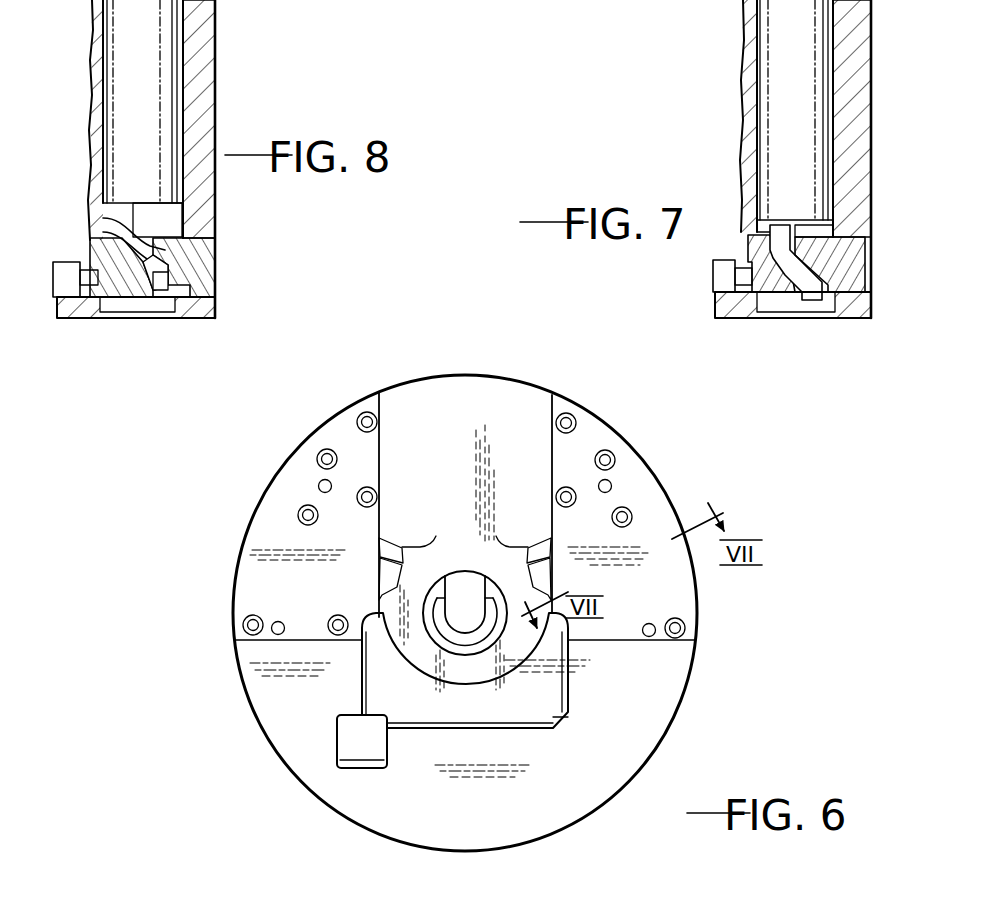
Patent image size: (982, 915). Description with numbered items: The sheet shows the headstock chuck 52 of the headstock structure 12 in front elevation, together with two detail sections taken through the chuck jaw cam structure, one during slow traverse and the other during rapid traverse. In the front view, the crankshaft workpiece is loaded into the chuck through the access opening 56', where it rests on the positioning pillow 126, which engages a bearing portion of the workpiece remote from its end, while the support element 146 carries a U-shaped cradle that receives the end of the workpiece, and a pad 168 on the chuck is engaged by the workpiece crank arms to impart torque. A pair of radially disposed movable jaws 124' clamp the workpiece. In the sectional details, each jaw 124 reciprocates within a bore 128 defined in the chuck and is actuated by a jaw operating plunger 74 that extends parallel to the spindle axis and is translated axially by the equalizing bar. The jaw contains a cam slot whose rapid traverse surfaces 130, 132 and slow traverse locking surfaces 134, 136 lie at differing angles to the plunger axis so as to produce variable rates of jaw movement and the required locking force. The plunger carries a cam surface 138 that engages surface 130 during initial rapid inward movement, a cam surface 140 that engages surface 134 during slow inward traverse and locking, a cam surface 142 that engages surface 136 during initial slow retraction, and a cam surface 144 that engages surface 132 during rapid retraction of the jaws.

In FIG. 6, the headstock structure 12 is at (210, 582).
In FIG. 6, the headstock chuck 52 is at (659, 754).
In FIG. 6, the access opening 56' is at (464, 553).
In FIG. 8, the jaw operating plunger 74 is at (135, 33).
In FIG. 7, the jaw operating plunger 74 is at (795, 38).
In FIG. 8, the movable jaw 124 is at (196, 267).
In FIG. 7, the movable jaw 124 is at (858, 261).
In FIG. 6, the movable jaw 124' is at (465, 556).
In FIG. 6, the positioning pillow 126 is at (468, 710).
In FIG. 8, the bore 128 is at (88, 318).
In FIG. 7, the rapid traverse surface 130 is at (764, 302).
In FIG. 7, the rapid traverse surface 132 is at (816, 258).
In FIG. 8, the slow traverse locking surface 134 is at (178, 303).
In FIG. 7, the slow traverse locking surface 134 is at (795, 298).
In FIG. 8, the slow traverse locking surface 136 is at (200, 318).
In FIG. 7, the cam surface 138 is at (811, 300).
In FIG. 8, the cam surface 140 is at (165, 265).
In FIG. 8, the cam surface 142 is at (192, 282).
In FIG. 8, the cam surface 144 is at (150, 240).
In FIG. 7, the cam surface 144 is at (800, 252).
In FIG. 6, the support element 146 is at (463, 597).
In FIG. 6, the pad 168 is at (353, 739).